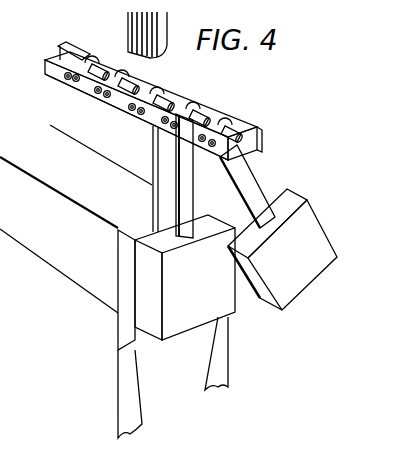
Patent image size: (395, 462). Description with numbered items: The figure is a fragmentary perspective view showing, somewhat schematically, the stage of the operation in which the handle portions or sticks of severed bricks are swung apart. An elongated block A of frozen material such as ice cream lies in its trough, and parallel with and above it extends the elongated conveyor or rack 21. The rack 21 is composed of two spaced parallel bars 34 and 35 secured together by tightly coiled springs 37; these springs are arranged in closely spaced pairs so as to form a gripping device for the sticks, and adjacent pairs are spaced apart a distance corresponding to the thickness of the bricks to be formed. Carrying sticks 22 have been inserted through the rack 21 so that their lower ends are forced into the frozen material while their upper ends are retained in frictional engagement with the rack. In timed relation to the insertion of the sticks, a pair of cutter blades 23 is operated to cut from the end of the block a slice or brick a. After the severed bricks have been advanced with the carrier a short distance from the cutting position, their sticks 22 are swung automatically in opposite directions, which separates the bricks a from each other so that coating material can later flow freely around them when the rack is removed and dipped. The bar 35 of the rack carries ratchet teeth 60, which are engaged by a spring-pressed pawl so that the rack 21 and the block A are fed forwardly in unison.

The rack 21 is at (90, 88).
The carrying sticks 22 is at (126, 26).
The cutter blades 23 is at (125, 252).
The bar 34 is at (125, 103).
The bar 35 is at (263, 112).
The tightly coiled springs 37 is at (198, 110).
The ratchet teeth 60 is at (88, 50).
The block of frozen material A is at (57, 252).
The brick a is at (322, 232).